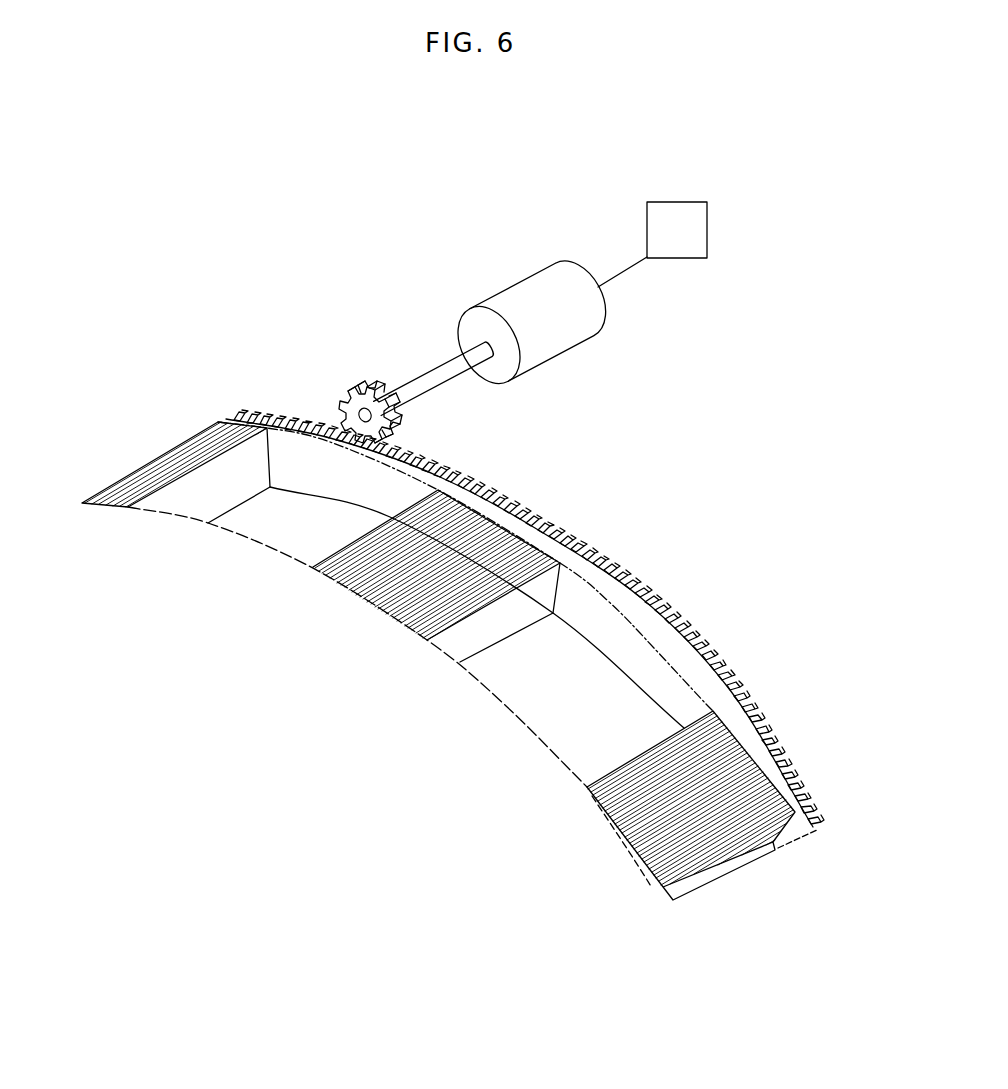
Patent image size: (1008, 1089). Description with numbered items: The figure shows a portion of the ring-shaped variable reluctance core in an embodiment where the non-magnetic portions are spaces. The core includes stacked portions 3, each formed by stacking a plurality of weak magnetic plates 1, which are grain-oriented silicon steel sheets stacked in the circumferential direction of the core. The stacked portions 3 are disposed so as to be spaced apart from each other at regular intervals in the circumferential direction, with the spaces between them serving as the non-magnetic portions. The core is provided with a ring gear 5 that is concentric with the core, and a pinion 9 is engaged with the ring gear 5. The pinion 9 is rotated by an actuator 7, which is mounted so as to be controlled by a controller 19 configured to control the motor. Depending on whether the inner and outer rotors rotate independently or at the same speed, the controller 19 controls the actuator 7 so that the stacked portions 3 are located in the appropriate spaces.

The weak magnetic plates 1 is at (556, 565).
The stacked portions 3 is at (305, 568).
The ring gear 5 is at (588, 547).
The actuator 7 is at (527, 295).
The pinion 9 is at (372, 375).
The controller 19 is at (678, 250).